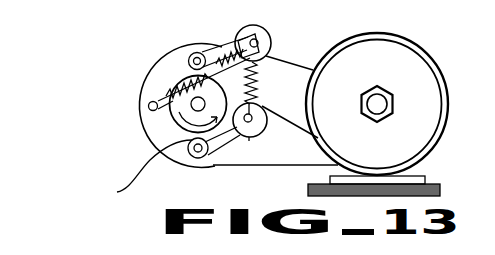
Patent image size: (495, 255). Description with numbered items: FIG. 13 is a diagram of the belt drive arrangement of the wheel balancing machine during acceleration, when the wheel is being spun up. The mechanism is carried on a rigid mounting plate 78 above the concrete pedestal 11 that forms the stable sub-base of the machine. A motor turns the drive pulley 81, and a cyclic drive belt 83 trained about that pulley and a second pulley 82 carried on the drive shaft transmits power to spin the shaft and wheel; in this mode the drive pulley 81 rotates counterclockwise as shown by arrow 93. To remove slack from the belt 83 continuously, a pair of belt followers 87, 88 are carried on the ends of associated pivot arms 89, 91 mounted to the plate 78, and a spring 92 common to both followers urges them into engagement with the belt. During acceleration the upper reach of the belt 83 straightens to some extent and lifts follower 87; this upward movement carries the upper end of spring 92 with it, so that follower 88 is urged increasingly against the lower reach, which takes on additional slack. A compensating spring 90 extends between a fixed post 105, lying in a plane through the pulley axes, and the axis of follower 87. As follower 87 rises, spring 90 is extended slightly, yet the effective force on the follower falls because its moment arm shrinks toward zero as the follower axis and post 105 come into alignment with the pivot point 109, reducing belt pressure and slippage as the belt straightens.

The pedestal 11 is at (308, 192).
The mounting plate 78 is at (156, 64).
The drive pulley 81 is at (160, 137).
The pulley 82 is at (388, 58).
The drive belt 83 is at (272, 48).
The belt follower 87 is at (256, 26).
The belt follower 88 is at (248, 138).
The pivot arm 89 is at (202, 53).
The compensating spring 90 is at (142, 77).
The pivot arm 91 is at (139, 172).
The spring 92 is at (260, 86).
The arrow 93 is at (178, 128).
The fixed post 105 is at (149, 107).
The pivot point 109 is at (198, 66).